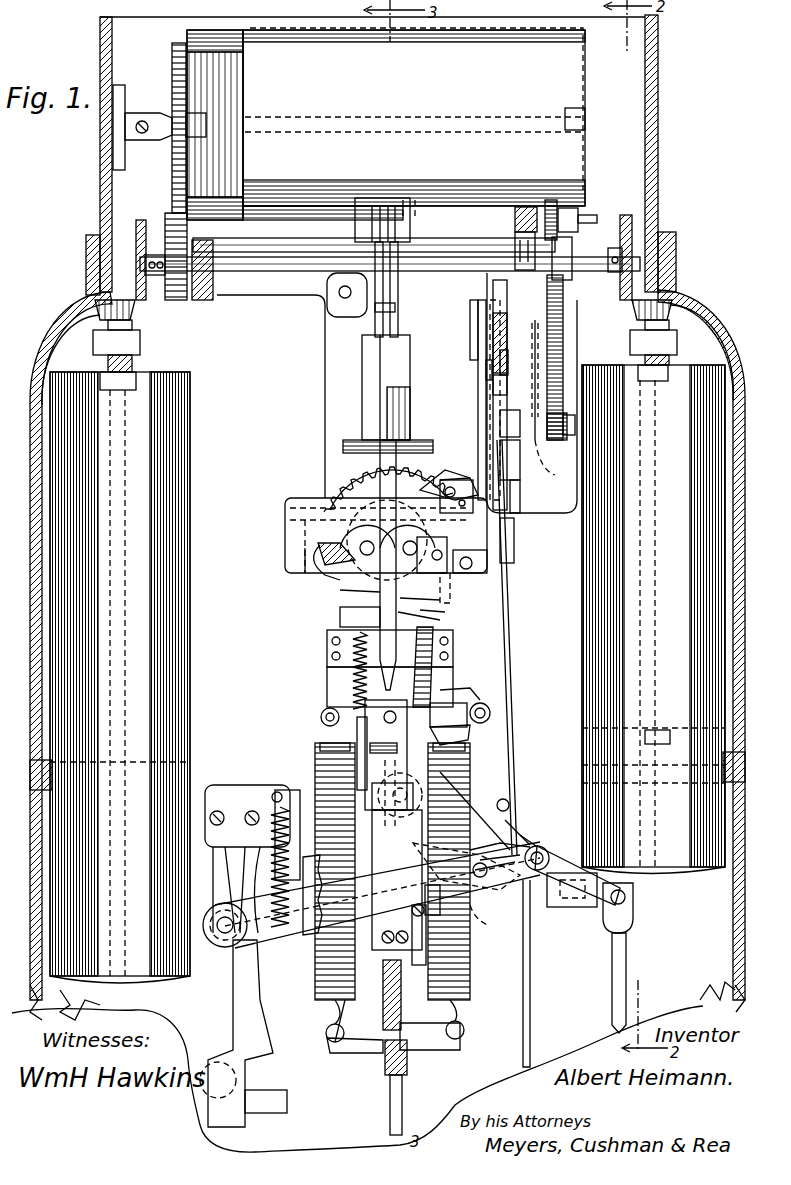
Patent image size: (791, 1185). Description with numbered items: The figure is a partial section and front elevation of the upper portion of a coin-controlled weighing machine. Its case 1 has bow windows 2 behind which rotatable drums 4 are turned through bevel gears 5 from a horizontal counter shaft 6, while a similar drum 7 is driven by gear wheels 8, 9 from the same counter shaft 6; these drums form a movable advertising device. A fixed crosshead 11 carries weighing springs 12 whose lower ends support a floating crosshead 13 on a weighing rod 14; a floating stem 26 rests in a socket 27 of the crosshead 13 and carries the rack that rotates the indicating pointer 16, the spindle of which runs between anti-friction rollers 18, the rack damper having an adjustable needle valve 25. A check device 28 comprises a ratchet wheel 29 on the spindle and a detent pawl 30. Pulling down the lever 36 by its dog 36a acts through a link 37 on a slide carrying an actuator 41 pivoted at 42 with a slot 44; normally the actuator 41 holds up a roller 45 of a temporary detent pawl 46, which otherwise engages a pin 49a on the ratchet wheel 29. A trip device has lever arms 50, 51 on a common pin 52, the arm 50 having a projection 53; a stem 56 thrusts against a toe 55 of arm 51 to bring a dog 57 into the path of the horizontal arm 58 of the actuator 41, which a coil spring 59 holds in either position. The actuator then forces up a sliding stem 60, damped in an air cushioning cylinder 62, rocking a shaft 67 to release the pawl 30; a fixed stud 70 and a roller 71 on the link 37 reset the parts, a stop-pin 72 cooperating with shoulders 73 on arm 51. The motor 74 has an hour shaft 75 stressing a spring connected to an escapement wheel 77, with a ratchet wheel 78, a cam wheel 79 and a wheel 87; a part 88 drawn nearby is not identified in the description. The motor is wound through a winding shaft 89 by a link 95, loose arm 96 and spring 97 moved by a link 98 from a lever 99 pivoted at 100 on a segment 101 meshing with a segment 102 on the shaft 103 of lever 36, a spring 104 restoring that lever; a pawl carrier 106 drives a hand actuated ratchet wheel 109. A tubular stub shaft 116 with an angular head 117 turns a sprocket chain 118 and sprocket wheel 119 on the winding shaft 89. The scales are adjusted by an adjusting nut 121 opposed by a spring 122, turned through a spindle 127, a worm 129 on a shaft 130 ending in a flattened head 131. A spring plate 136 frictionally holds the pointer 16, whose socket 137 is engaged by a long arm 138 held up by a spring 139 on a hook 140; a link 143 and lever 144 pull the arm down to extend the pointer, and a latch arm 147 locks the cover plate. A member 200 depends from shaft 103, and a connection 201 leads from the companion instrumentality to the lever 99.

The case 1 is at (397, 393).
The bow windows 2 is at (32, 582).
The rotatable drums 4 is at (182, 535).
The bevel gears 5 is at (135, 325).
The horizontal counter shaft 6 is at (290, 265).
The drum 7 is at (386, 124).
The gear wheel 8 is at (172, 75).
The gear wheel 9 is at (187, 298).
The fixed crosshead 11 is at (328, 690).
The weighing springs 12 is at (318, 982).
The floating crosshead 13 is at (345, 1045).
The weighing rod 14 is at (408, 1082).
The indicating pointer 16 is at (385, 600).
The anti-friction rollers 18 is at (336, 542).
The adjustable needle valve 25 is at (478, 305).
The floating stem 26 is at (398, 978).
The socket 27 is at (403, 1005).
The check device 28 is at (440, 470).
The ratchet wheel 29 is at (335, 505).
The detent pawl 30 is at (450, 486).
The lever 36 is at (480, 890).
The dog 36a is at (510, 848).
The link 37 is at (422, 780).
The actuator 41 is at (454, 618).
The pivot 42 is at (445, 705).
The slot 44 is at (440, 690).
The roller 45 is at (452, 547).
The temporary detent pawl 46 is at (462, 589).
The pin 49a is at (437, 607).
The lever arm 50 is at (503, 811).
The lever arm 51 is at (512, 830).
The common pin 52 is at (485, 921).
The projection 53 is at (498, 858).
The toe 55 is at (540, 895).
The stem 56 is at (531, 980).
The dog 57 is at (540, 846).
The horizontal arm 58 is at (470, 730).
The coil spring 59 is at (432, 675).
The sliding stem 60 is at (405, 612).
The air cushioning cylinder 62 is at (400, 415).
The shaft 67 is at (459, 496).
The fixed stud 70 is at (490, 705).
The roller 71 is at (466, 866).
The stop-pin 72 is at (500, 846).
The shoulders 73 is at (522, 840).
The motor 74 is at (449, 330).
The hour shaft 75 is at (490, 313).
The escapement wheel 77 is at (540, 345).
The ratchet wheel 78 is at (493, 383).
The cam wheel 79 is at (486, 368).
The wheel 87 is at (540, 365).
The bracket 88 is at (520, 248).
The winding shaft 89 is at (575, 427).
The link 95 is at (508, 528).
The loose arm 96 is at (505, 548).
The spring 97 is at (512, 560).
The link 98 is at (510, 630).
The lever 99 is at (565, 870).
The pivot 100 is at (510, 770).
The segment 101 is at (285, 790).
The segment 102 is at (262, 940).
The shaft 103 is at (225, 930).
The spring 104 is at (255, 805).
The pawl carrier 106 is at (493, 345).
The hand actuated ratchet wheel 109 is at (500, 358).
The tubular stub shaft 116 is at (528, 200).
The angular head 117 is at (578, 212).
The sprocket chain 118 is at (563, 315).
The sprocket wheel 119 is at (566, 418).
The adjusting nut 121 is at (322, 712).
The spring 122 is at (388, 880).
The spindle 127 is at (398, 290).
The worm 129 is at (400, 215).
The shaft 130 is at (470, 218).
The flattened head 131 is at (597, 218).
The spring plate 136 is at (320, 548).
The socket 137 is at (375, 605).
The long arm 138 is at (387, 543).
The spring 139 is at (330, 660).
The hook 140 is at (350, 625).
The link 143 is at (351, 670).
The lever 144 is at (382, 768).
The latch arm 147 is at (320, 830).
The member 200 is at (241, 1033).
The connection 201 is at (610, 958).